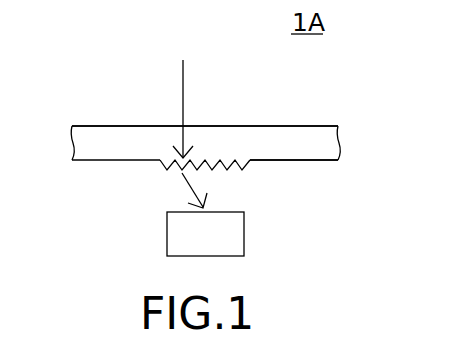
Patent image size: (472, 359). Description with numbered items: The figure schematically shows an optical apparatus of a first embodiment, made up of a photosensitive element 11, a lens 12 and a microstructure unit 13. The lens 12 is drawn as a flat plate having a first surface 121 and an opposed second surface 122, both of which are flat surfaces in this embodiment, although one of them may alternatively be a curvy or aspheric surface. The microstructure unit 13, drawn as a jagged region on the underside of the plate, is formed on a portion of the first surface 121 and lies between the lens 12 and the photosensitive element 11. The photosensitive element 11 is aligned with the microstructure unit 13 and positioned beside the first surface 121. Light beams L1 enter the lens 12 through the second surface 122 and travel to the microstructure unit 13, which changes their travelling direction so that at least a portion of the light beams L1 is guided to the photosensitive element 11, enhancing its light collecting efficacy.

The photosensitive element 11 is at (222, 227).
The lens 12 is at (118, 129).
The microstructure unit 13 is at (172, 170).
The first surface 121 is at (303, 160).
The second surface 122 is at (262, 126).
The light beams L1 is at (182, 87).